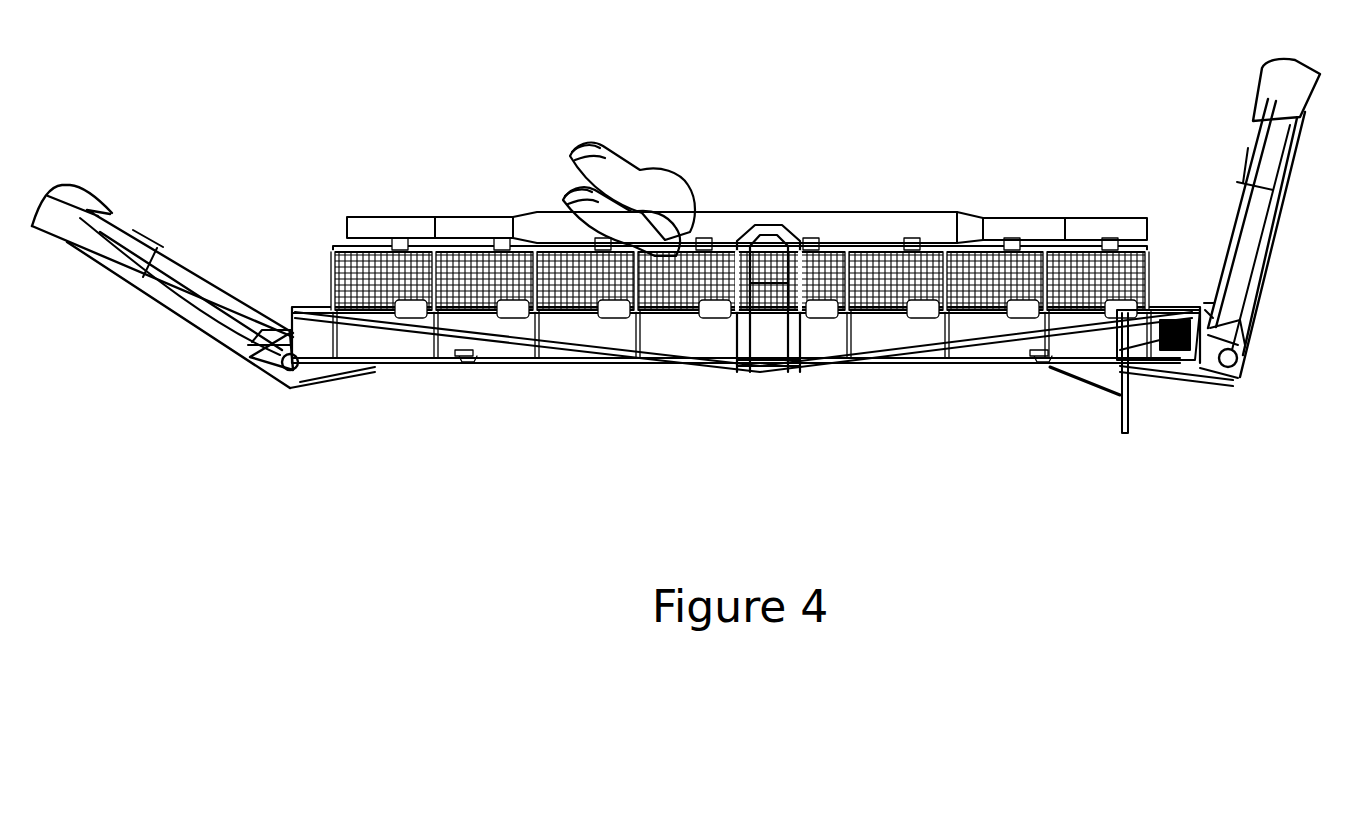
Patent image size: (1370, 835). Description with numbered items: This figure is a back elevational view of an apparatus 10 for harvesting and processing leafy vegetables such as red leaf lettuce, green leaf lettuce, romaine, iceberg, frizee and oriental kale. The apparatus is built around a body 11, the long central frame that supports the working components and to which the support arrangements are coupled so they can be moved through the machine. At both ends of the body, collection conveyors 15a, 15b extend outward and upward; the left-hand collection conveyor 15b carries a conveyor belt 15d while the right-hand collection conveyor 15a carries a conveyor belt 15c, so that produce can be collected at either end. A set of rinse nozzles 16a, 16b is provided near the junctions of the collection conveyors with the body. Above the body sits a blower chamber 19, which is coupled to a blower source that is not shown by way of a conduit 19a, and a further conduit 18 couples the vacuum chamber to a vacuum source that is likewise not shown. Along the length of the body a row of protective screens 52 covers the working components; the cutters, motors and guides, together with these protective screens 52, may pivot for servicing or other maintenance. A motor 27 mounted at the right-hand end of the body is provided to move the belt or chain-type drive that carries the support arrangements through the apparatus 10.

The apparatus 10 is at (1063, 83).
The body 11 is at (945, 362).
The collection conveyor 15a is at (1248, 252).
The collection conveyor 15b is at (200, 307).
The conveyor belt 15c is at (1268, 283).
The conveyor belt 15d is at (157, 310).
The rinse nozzle 16a is at (1213, 291).
The rinse nozzle 16b is at (260, 307).
The conduit 18 is at (636, 176).
The blower chamber 19 is at (857, 225).
The conduit 19a is at (565, 206).
The motor 27 is at (1173, 352).
The protective screens 52 is at (490, 310).